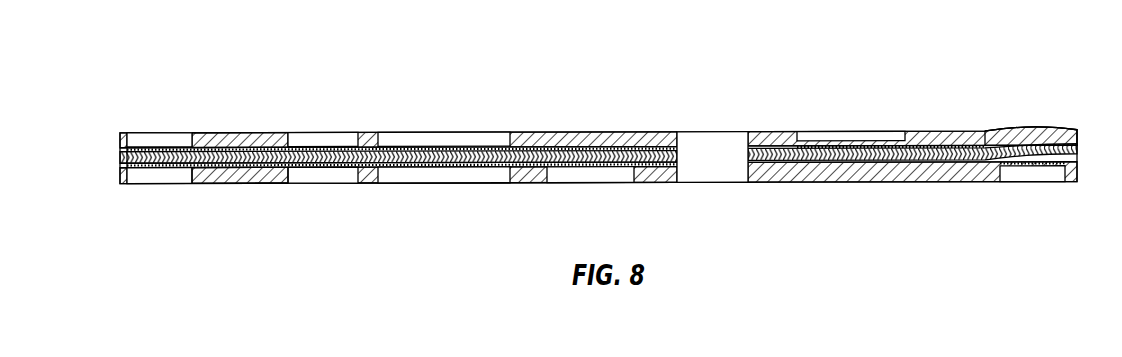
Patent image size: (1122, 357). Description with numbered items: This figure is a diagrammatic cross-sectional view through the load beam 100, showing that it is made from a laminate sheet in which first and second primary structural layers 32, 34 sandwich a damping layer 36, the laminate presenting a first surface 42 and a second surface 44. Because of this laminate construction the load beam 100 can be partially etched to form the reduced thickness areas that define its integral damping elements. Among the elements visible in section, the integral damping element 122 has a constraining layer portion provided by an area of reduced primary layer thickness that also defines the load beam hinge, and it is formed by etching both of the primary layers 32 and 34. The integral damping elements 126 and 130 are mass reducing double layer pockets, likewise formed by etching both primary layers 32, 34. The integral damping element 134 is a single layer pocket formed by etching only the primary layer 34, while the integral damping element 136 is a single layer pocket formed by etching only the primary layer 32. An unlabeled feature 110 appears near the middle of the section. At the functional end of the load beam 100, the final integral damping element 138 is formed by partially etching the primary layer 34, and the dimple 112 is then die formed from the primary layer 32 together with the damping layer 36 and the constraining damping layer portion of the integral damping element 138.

The load beam 100 is at (187, 57).
The first primary structural layer 32 is at (120, 137).
The damping layer 36 is at (120, 157).
The second primary structural layer 34 is at (120, 182).
The integral damping element 126 is at (153, 131).
The first surface 42 is at (248, 133).
The second surface 44 is at (252, 184).
The integral damping element 130 is at (333, 131).
The integral damping element 122 is at (466, 131).
The integral damping element 134 is at (585, 177).
The window 110 is at (707, 150).
The integral damping element 136 is at (844, 133).
The dimple 112 is at (1038, 130).
The integral damping element 138 is at (1033, 187).